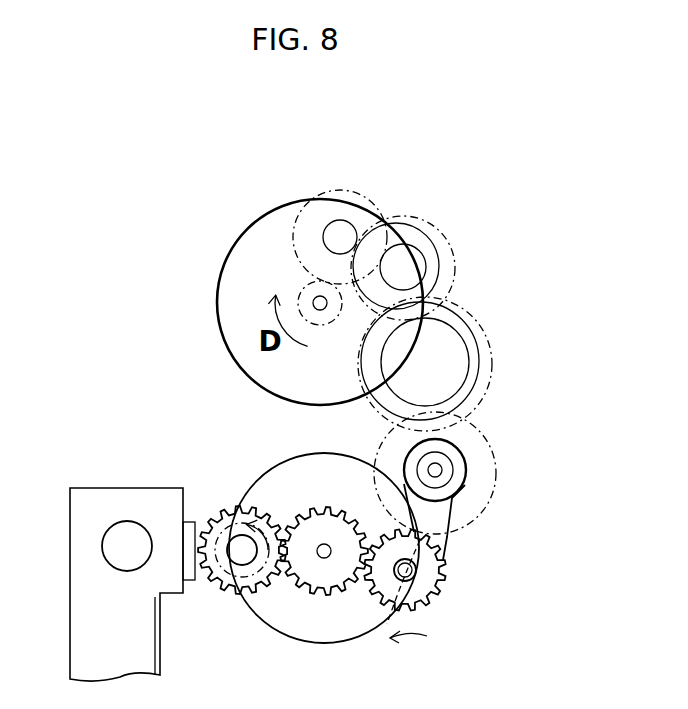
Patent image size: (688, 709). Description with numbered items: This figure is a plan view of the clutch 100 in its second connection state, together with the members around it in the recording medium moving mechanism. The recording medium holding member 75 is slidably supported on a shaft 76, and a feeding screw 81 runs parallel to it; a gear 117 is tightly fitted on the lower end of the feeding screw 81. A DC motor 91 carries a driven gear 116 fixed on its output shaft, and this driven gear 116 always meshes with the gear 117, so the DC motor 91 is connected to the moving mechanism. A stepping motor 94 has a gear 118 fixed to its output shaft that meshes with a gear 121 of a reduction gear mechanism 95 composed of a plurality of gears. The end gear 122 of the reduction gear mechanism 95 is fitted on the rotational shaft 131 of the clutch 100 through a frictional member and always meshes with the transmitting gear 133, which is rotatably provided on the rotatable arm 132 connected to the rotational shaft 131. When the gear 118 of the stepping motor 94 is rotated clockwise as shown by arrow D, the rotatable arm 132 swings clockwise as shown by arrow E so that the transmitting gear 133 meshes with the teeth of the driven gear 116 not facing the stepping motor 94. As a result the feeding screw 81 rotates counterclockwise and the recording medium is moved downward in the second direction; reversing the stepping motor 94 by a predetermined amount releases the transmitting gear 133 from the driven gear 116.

The recording medium holding member 75 is at (98, 615).
The shaft 76 is at (127, 532).
The feeding screw 81 is at (232, 588).
The DC motor 91 is at (326, 632).
The stepping motor 94 is at (263, 229).
The reduction gear mechanism 95 is at (431, 160).
The clutch 100 is at (443, 603).
The driven gear 116 is at (300, 517).
The gear 117 is at (268, 592).
The gear 118 is at (298, 288).
The gear 121 is at (352, 190).
The end gear 122 is at (505, 452).
The rotational shaft 131 is at (438, 473).
The rotatable arm 132 is at (430, 507).
The transmitting gear 133 is at (428, 577).